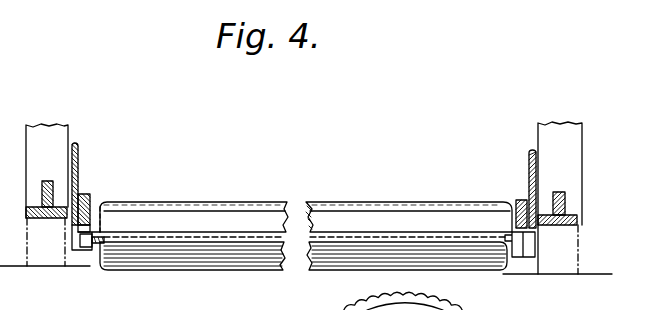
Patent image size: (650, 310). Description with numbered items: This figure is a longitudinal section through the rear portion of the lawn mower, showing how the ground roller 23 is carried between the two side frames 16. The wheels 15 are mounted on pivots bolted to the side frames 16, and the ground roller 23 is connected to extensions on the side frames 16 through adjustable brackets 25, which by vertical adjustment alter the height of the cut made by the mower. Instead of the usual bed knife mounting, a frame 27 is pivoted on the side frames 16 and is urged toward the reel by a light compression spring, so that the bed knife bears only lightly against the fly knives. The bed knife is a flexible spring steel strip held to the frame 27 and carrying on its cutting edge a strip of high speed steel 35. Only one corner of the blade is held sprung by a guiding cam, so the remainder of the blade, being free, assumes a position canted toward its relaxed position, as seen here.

The wheels 15 is at (38, 267).
The side frames 16 is at (78, 147).
The ground roller 23 is at (214, 203).
The adjustable brackets 25 is at (93, 250).
The frame 27 is at (88, 195).
The strip of high speed steel 35 is at (188, 240).